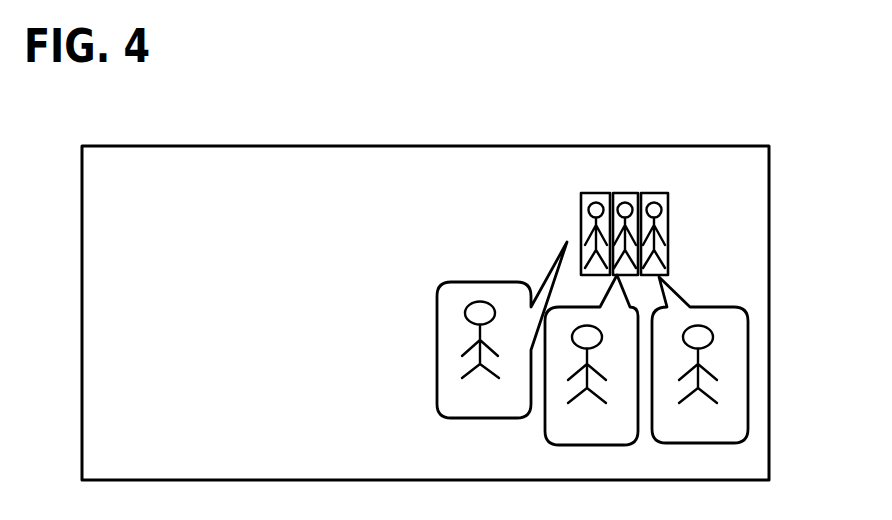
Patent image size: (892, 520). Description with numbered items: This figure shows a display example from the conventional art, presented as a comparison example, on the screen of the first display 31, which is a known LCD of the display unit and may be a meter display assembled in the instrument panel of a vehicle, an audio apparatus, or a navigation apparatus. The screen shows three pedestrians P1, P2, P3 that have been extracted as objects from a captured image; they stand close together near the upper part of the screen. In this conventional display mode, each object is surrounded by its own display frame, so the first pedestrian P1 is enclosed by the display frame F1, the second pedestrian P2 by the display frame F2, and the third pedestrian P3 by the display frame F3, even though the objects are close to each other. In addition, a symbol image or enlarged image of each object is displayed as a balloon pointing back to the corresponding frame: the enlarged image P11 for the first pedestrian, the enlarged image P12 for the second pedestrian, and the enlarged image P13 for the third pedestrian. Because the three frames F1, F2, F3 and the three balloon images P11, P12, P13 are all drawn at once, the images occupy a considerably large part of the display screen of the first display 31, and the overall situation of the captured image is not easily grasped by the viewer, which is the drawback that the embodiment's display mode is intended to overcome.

The first display 31 is at (425, 146).
The display frame F1 is at (581, 229).
The display frame F2 is at (617, 193).
The display frame F3 is at (668, 247).
The pedestrian P1 is at (591, 206).
The pedestrian P2 is at (629, 205).
The pedestrian P3 is at (660, 206).
The enlarged image P11 is at (437, 370).
The enlarged image P12 is at (545, 414).
The enlarged image P13 is at (748, 402).